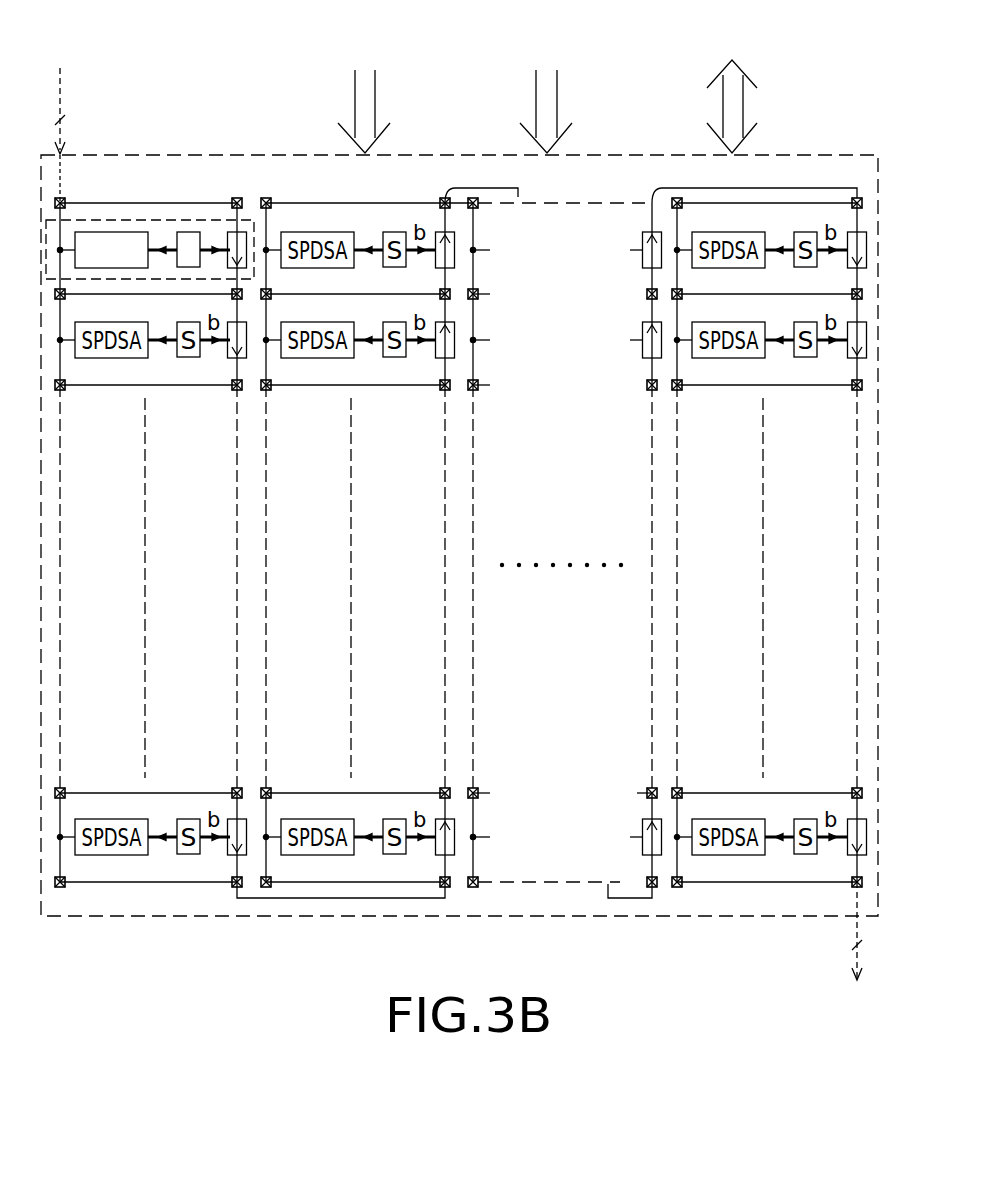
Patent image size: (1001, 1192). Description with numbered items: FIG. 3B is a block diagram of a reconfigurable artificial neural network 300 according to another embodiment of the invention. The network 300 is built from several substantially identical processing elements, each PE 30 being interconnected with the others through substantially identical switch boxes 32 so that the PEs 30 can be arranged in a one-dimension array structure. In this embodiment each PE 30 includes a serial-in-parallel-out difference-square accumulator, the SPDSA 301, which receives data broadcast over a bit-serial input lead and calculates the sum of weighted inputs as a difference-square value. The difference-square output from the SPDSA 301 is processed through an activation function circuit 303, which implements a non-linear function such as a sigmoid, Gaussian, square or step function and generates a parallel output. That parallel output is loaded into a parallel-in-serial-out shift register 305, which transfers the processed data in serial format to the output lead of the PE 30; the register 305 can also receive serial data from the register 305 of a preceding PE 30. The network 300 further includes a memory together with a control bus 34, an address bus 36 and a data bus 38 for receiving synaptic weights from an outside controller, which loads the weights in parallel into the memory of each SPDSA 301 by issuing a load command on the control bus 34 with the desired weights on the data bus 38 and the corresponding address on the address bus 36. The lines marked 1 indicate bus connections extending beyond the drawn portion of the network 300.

The bus line 1 is at (468, 524).
The processing element (PE) 30 is at (179, 159).
The switch box 32 is at (63, 202).
The control bus 34 is at (375, 83).
The address bus 36 is at (557, 88).
The data bus 38 is at (743, 105).
The artificial neural network 300 is at (237, 916).
The serial-in-parallel-out difference-square accumulator (SPDSA) 301 is at (148, 230).
The activation function circuit 303 is at (185, 228).
The parallel-in-serial-out shift register 305 is at (249, 222).